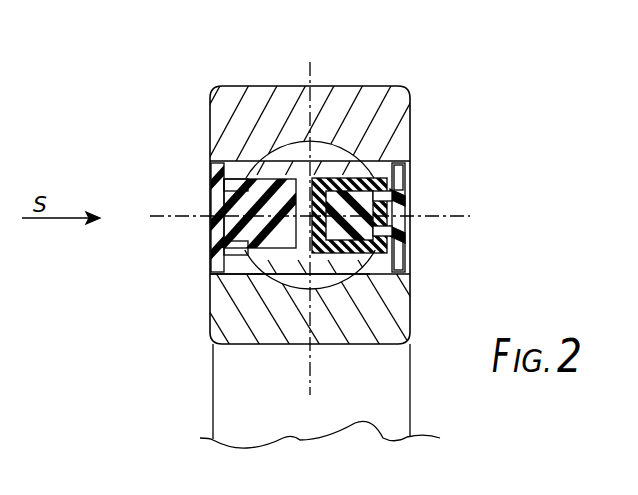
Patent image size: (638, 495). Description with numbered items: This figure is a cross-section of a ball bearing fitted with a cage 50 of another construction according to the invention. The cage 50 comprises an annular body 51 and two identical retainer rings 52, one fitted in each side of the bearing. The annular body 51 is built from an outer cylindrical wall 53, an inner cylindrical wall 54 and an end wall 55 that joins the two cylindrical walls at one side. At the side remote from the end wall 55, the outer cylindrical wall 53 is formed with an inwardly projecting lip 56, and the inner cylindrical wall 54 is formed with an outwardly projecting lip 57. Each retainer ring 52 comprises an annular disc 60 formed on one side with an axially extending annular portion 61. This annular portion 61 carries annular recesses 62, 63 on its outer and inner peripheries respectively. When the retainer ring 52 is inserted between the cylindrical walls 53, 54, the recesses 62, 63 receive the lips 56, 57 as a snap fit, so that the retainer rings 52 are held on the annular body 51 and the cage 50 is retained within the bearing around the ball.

The cage 50 is at (413, 198).
The annular body 51 is at (362, 255).
The retainer ring 52 is at (240, 210).
The outer cylindrical wall 53 is at (400, 108).
The inner cylindrical wall 54 is at (366, 255).
The end wall 55 is at (300, 258).
The inwardly projecting lip 56 is at (393, 200).
The outwardly projecting lip 57 is at (393, 233).
The annular disc 60 is at (214, 183).
The annular portion 61 is at (233, 274).
The annular recess 62 is at (226, 188).
The annular recess 63 is at (226, 252).